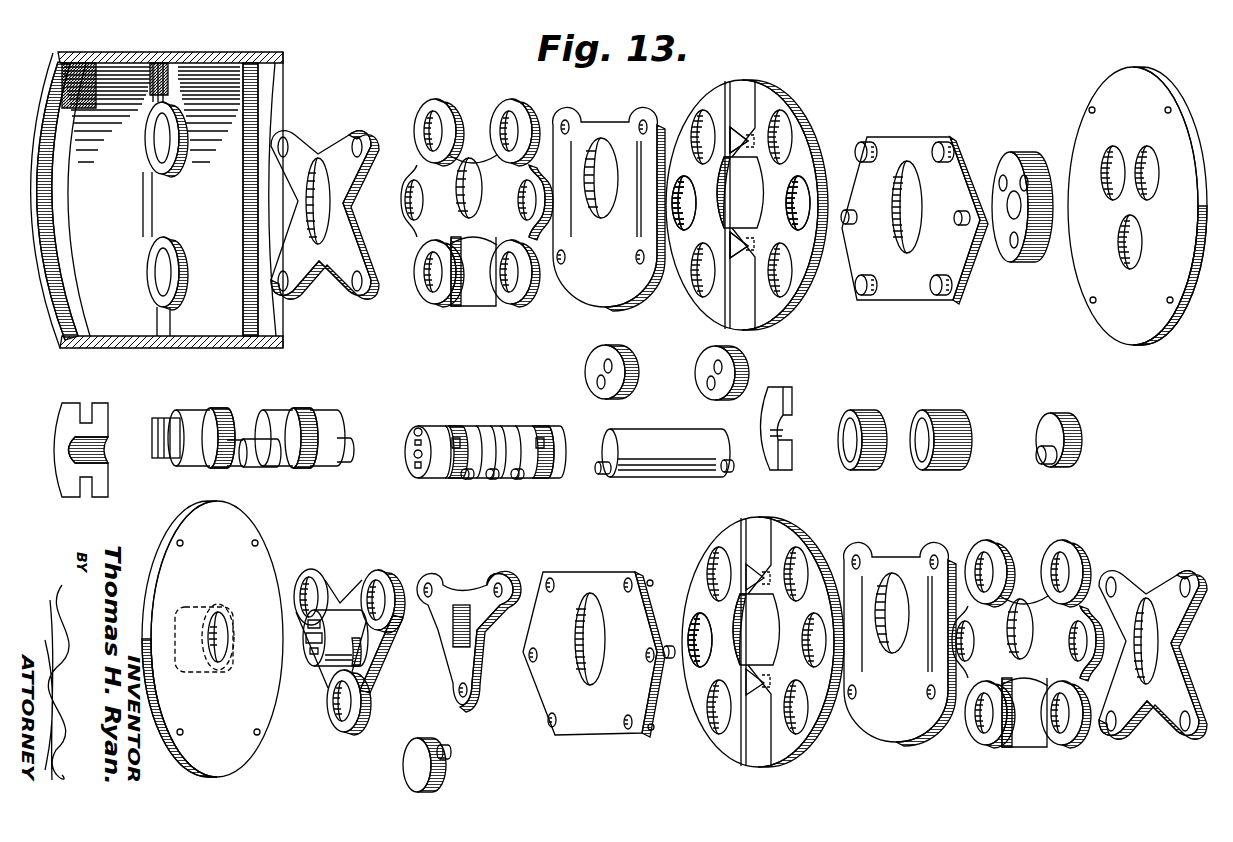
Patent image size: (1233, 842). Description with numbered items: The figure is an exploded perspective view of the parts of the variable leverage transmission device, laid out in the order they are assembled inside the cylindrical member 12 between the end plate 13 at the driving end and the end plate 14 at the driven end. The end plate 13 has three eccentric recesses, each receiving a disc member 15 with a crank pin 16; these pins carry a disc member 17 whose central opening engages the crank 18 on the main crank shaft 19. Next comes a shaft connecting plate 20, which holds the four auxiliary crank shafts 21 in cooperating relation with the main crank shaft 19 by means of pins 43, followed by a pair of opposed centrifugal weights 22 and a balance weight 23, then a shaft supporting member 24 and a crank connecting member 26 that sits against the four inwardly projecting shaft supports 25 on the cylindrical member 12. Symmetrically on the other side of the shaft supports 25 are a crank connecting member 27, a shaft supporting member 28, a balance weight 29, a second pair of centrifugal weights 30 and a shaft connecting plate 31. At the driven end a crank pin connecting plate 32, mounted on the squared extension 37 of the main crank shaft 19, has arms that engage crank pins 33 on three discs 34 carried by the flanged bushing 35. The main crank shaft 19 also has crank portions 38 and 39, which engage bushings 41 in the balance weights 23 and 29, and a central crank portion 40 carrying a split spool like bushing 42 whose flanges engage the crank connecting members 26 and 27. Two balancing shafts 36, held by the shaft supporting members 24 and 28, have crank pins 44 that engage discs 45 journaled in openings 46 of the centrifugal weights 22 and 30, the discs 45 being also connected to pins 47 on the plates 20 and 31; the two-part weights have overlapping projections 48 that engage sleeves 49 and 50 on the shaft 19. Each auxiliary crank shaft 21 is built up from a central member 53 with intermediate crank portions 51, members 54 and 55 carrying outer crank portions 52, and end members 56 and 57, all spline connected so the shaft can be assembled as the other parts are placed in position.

The cylindrical member 12 is at (200, 55).
The end plate 13 is at (1112, 90).
The end plate 14 is at (240, 752).
The disc member 15 is at (1048, 425).
The crank pin 16 is at (1040, 463).
The disc member 17 is at (1013, 163).
The crank 18 is at (334, 470).
The main crank shaft 19 is at (278, 410).
The shaft connecting plate 20 is at (920, 147).
The auxiliary crank shaft 21 is at (511, 424).
The centrifugal weight 22 is at (772, 85).
The balance weight 23 is at (598, 130).
The shaft supporting member 24 is at (458, 142).
The shaft support 25 is at (150, 236).
The crank connecting member 26 is at (313, 146).
The crank connecting member 27 is at (1148, 592).
The shaft supporting member 28 is at (1022, 590).
The balance weight 29 is at (885, 568).
The centrifugal weight 30 is at (796, 520).
The shaft connecting plate 31 is at (575, 578).
The crank pin connecting plate 32 is at (462, 590).
The crank pin 33 is at (448, 753).
The disc 34 is at (405, 770).
The flanged bushing 35 is at (360, 592).
The balancing shaft 36 is at (657, 442).
The squared extension 37 is at (158, 450).
The crank portion 38 is at (298, 418).
The crank portion 39 is at (212, 418).
The central crank portion 40 is at (790, 395).
The bushing 41 is at (246, 468).
The split spool like bushing 42 is at (68, 385).
The pin 43 is at (860, 142).
The crank pin 44 is at (605, 474).
The disc 45 is at (591, 356).
The opening 46 is at (691, 211).
The pin 47 is at (848, 210).
The overlapping projection 48 is at (742, 158).
The sleeve 49 is at (855, 418).
The sleeve 50 is at (942, 418).
The intermediate crank portion 51 is at (490, 480).
The outer crank portion 52 is at (452, 432).
The central member 53 is at (484, 432).
The member 54 is at (465, 480).
The member 55 is at (516, 480).
The end member 56 is at (412, 452).
The end member 57 is at (562, 445).